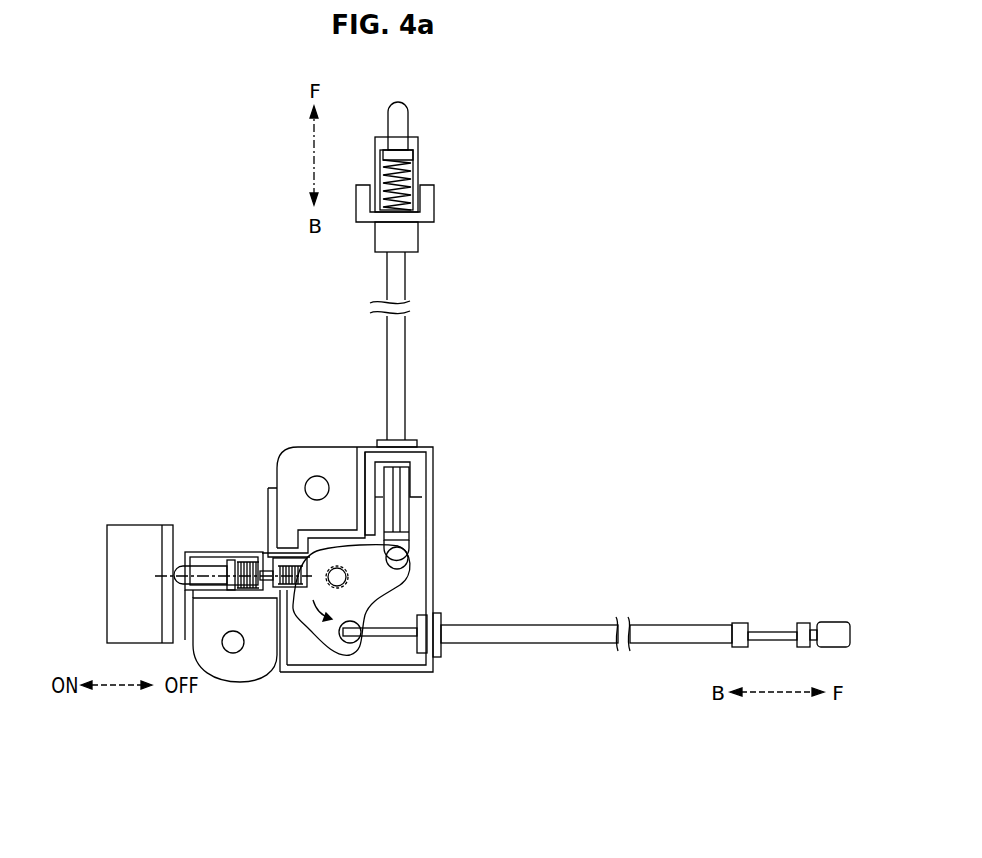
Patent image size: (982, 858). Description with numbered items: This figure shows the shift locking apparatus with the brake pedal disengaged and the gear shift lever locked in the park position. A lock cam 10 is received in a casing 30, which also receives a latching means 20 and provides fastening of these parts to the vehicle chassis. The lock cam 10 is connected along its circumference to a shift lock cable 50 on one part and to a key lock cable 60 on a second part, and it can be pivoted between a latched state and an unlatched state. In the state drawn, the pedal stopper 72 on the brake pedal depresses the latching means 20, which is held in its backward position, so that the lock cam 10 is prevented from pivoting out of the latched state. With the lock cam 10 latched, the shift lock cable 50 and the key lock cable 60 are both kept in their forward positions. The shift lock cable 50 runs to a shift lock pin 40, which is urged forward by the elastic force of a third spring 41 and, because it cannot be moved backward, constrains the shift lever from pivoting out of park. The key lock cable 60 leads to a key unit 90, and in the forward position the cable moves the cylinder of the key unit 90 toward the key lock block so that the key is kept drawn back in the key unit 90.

The lock cam 10 is at (316, 660).
The latching means 20 is at (203, 570).
The casing 30 is at (400, 672).
The shift lock pin 40 is at (405, 113).
The third spring 41 is at (410, 170).
The shift lock cable 50 is at (400, 507).
The key lock cable 60 is at (434, 593).
The pedal stopper 72 is at (118, 582).
The key unit 90 is at (832, 622).